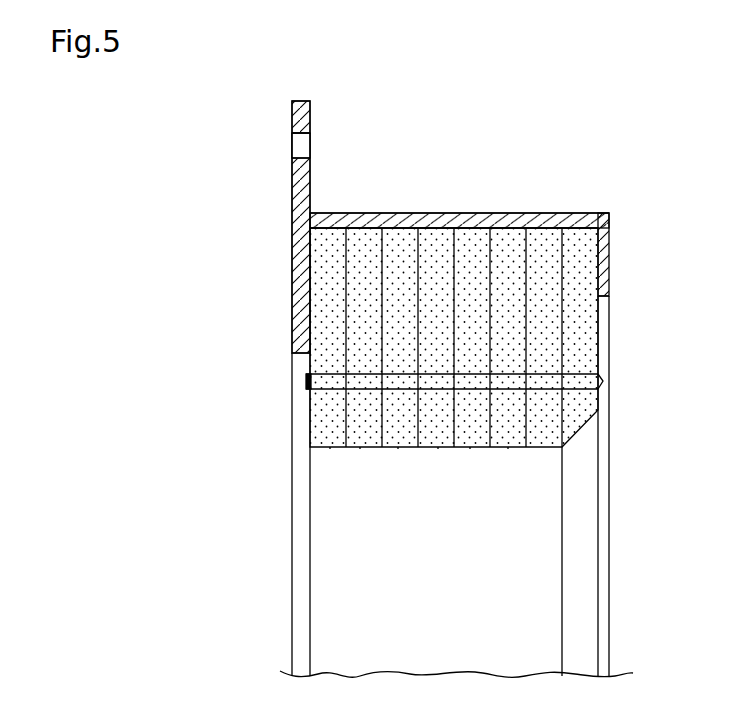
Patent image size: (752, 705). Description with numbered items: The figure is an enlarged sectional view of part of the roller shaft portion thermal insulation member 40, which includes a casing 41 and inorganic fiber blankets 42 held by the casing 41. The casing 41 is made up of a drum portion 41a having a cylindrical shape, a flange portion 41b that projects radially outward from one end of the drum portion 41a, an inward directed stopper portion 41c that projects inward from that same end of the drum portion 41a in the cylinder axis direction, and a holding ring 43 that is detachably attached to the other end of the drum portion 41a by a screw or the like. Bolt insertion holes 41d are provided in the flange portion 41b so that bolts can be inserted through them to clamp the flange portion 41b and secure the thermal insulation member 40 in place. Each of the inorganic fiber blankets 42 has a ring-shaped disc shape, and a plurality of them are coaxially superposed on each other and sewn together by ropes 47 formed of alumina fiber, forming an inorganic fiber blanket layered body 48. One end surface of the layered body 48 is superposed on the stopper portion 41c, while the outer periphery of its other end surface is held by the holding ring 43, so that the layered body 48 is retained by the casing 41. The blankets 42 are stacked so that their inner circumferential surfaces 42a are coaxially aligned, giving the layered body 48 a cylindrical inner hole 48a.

The roller shaft portion thermal insulation member 40 is at (517, 88).
The casing 41 is at (449, 210).
The drum portion 41a is at (512, 212).
The flange portion 41b is at (292, 117).
The stopper portion 41c is at (292, 318).
The bolt insertion holes 41d is at (296, 145).
The inorganic fiber blankets 42 is at (552, 337).
The inner circumferential surfaces 42a is at (398, 447).
The holding ring 43 is at (609, 255).
The ropes 47 is at (437, 373).
The inorganic fiber blanket layered body 48 is at (601, 346).
The cylindrical inner hole 48a is at (535, 553).